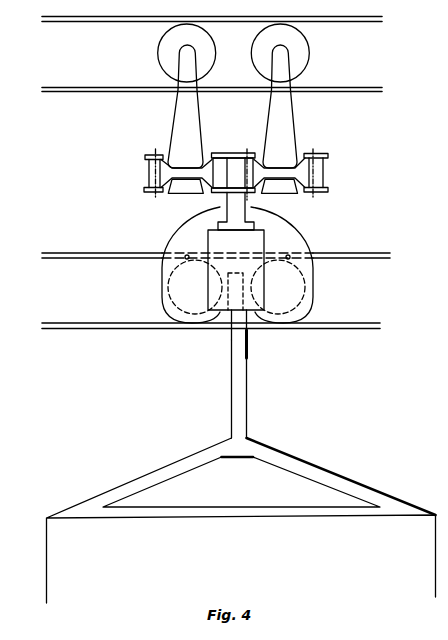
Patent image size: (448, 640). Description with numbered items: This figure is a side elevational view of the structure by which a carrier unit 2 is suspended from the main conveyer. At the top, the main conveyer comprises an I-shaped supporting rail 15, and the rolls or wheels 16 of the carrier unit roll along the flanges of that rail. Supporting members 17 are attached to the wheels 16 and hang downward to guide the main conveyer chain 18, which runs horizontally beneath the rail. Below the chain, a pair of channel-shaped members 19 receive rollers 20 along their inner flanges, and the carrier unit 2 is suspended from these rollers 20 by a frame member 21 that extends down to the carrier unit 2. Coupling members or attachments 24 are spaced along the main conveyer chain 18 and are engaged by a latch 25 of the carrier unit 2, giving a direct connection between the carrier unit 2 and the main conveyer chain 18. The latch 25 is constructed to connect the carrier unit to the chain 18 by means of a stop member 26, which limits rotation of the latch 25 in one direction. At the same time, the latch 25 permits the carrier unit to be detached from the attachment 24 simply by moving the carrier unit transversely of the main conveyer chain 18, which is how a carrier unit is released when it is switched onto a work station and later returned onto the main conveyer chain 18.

The supporting rail 15 is at (380, 22).
The wheels 16 is at (308, 45).
The supporting members 17 is at (295, 118).
The main conveyer chain 18 is at (327, 165).
The coupling members 24 is at (250, 198).
The latch 25 is at (288, 240).
The channel-shaped members 19 is at (362, 250).
The rollers 20 is at (287, 315).
The stop member 26 is at (245, 310).
The frame member 21 is at (242, 390).
The carrier unit 2 is at (390, 502).